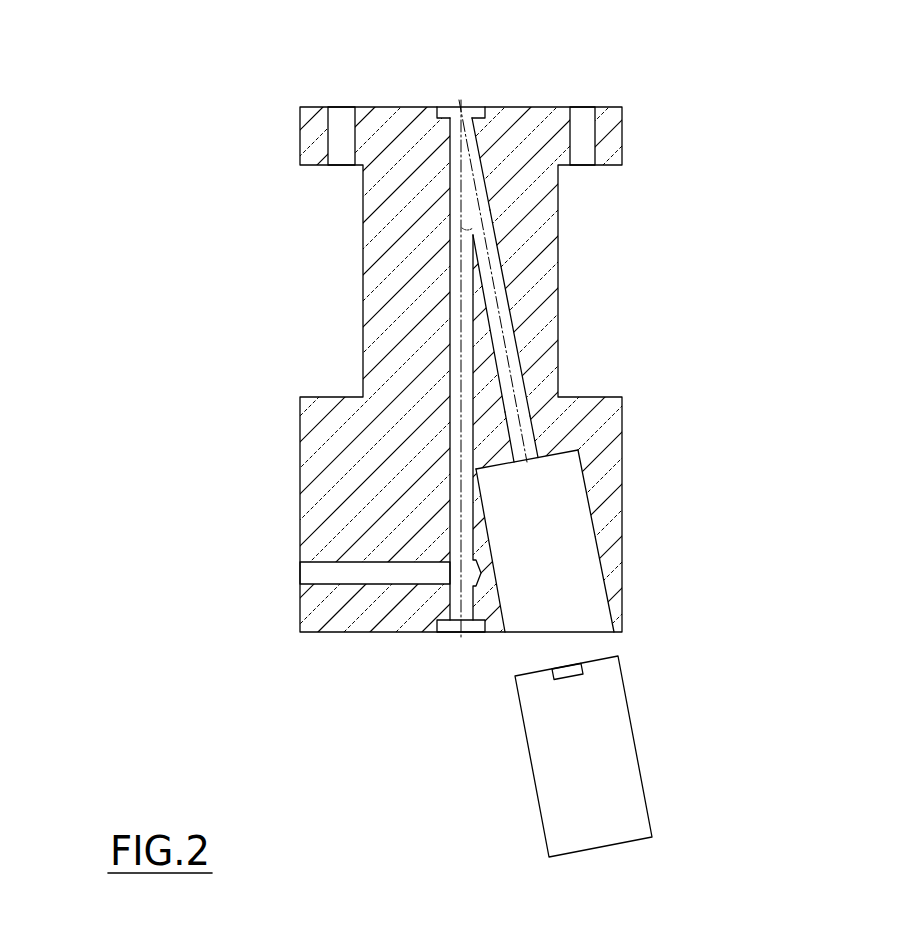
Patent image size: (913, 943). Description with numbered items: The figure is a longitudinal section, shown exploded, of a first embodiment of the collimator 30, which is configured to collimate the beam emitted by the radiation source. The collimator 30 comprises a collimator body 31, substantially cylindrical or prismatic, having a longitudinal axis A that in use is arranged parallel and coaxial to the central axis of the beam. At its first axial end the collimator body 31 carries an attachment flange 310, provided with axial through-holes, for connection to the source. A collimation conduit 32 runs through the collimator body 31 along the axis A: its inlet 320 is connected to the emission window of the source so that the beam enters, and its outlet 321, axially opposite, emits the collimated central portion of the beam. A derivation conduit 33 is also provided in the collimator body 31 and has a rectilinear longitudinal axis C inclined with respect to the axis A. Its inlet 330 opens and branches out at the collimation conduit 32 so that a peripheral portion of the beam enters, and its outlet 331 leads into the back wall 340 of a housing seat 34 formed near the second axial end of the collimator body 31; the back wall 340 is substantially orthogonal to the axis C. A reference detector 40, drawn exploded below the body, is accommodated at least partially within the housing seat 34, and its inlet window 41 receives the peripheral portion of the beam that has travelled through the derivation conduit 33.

The collimator 30 is at (197, 177).
The collimator body 31 is at (340, 432).
The collimation conduit 32 is at (448, 252).
The derivation conduit 33 is at (513, 312).
The housing seat 34 is at (540, 540).
The attachment flange 310 is at (615, 135).
The inlet 320 is at (457, 107).
The outlet 321 is at (458, 632).
The inlet 330 is at (485, 125).
The outlet 331 is at (532, 458).
The back wall 340 is at (505, 465).
The reference detector 40 is at (638, 758).
The inlet window 41 is at (582, 668).
The longitudinal axis A is at (462, 495).
The longitudinal axis C is at (518, 378).